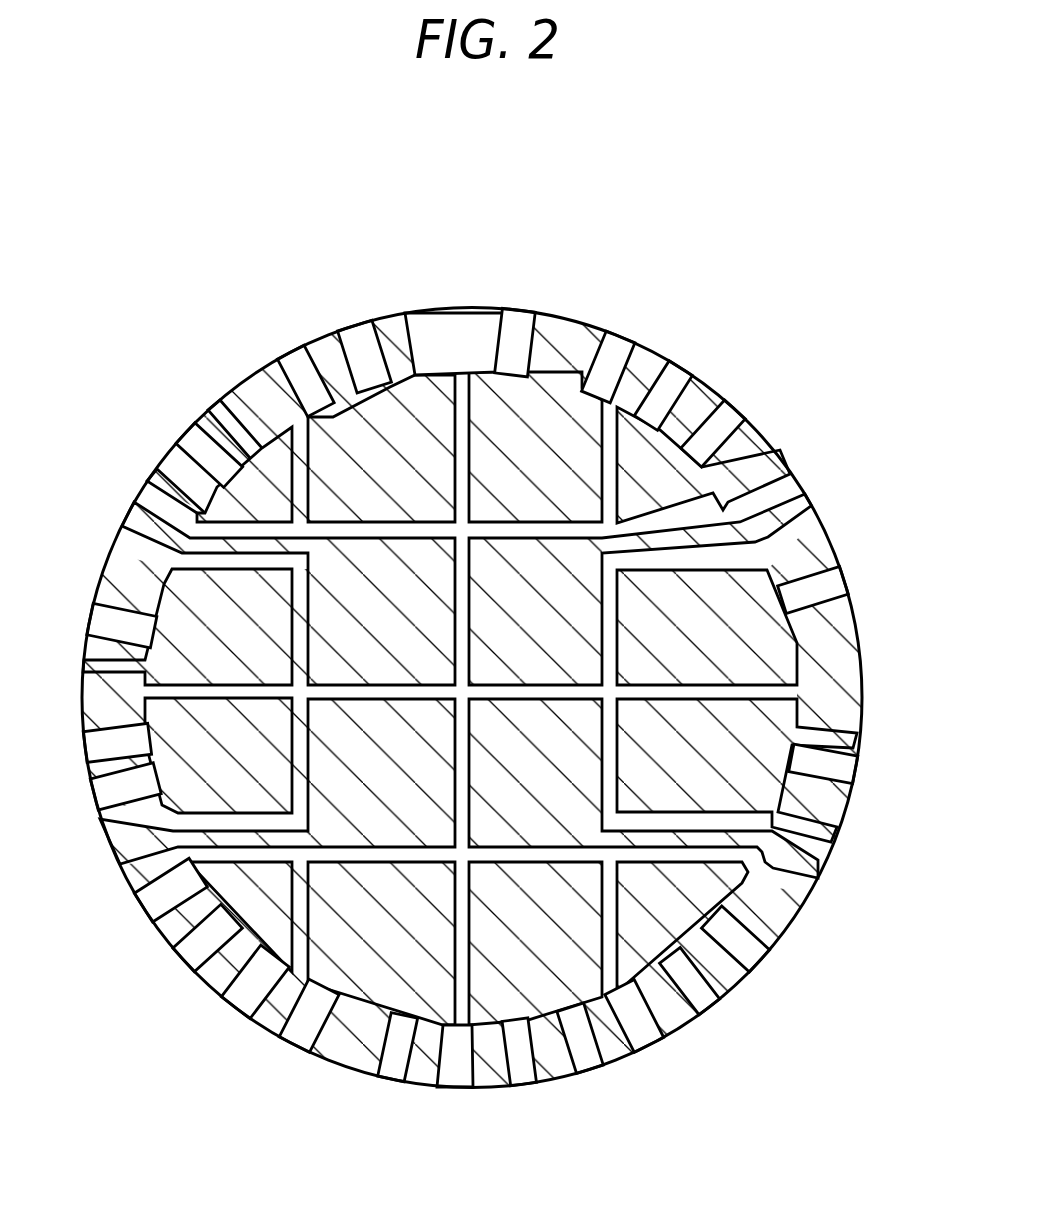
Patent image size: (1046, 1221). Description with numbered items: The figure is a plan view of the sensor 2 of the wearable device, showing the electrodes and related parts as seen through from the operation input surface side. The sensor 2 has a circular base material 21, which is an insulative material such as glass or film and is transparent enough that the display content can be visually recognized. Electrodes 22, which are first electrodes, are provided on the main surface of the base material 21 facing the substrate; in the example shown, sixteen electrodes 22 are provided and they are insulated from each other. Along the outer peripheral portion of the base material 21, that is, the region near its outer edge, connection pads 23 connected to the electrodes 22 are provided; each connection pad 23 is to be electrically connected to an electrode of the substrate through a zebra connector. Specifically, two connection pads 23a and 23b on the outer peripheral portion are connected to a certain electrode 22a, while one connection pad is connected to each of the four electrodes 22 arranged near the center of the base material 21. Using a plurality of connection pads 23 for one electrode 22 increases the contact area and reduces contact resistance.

The sensor 2 is at (468, 212).
The base material 21 is at (655, 348).
The electrode 22 is at (546, 570).
The electrode 22a is at (313, 460).
The connection pad 23 is at (815, 880).
The connection pad 23a is at (322, 345).
The connection pad 23b is at (392, 327).